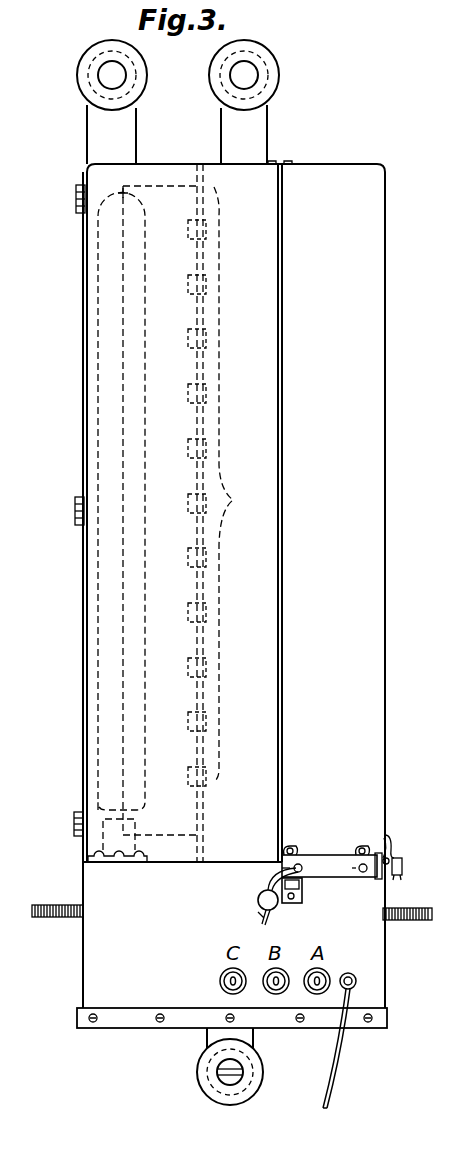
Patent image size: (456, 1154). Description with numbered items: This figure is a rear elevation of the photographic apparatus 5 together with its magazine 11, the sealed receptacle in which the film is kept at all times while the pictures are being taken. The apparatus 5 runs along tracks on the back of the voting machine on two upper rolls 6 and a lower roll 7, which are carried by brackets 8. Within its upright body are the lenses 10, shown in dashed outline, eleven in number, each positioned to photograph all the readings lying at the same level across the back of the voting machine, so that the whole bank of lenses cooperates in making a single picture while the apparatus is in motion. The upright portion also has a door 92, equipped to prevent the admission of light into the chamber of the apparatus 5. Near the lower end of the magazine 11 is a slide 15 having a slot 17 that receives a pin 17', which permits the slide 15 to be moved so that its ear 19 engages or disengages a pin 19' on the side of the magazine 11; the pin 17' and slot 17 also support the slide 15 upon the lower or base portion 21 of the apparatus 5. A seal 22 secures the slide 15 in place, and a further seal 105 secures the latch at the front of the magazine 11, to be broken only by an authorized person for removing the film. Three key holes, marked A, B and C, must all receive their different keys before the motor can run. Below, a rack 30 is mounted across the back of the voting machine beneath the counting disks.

The photographic apparatus 5 is at (75, 568).
The upper roll 6 is at (140, 58).
The lower roll 7 is at (200, 1074).
The bracket 8 is at (125, 131).
The lens 10 is at (240, 483).
The magazine 11 is at (392, 438).
The slide 15 is at (321, 868).
The slot 17 is at (301, 888).
The pin 17' is at (328, 870).
The ear 19 is at (310, 828).
The pin 19' is at (300, 842).
The base portion 21 is at (176, 901).
The seal 22 is at (257, 903).
The rack 30 is at (52, 920).
The door 92 is at (83, 342).
The seal 105 is at (403, 866).